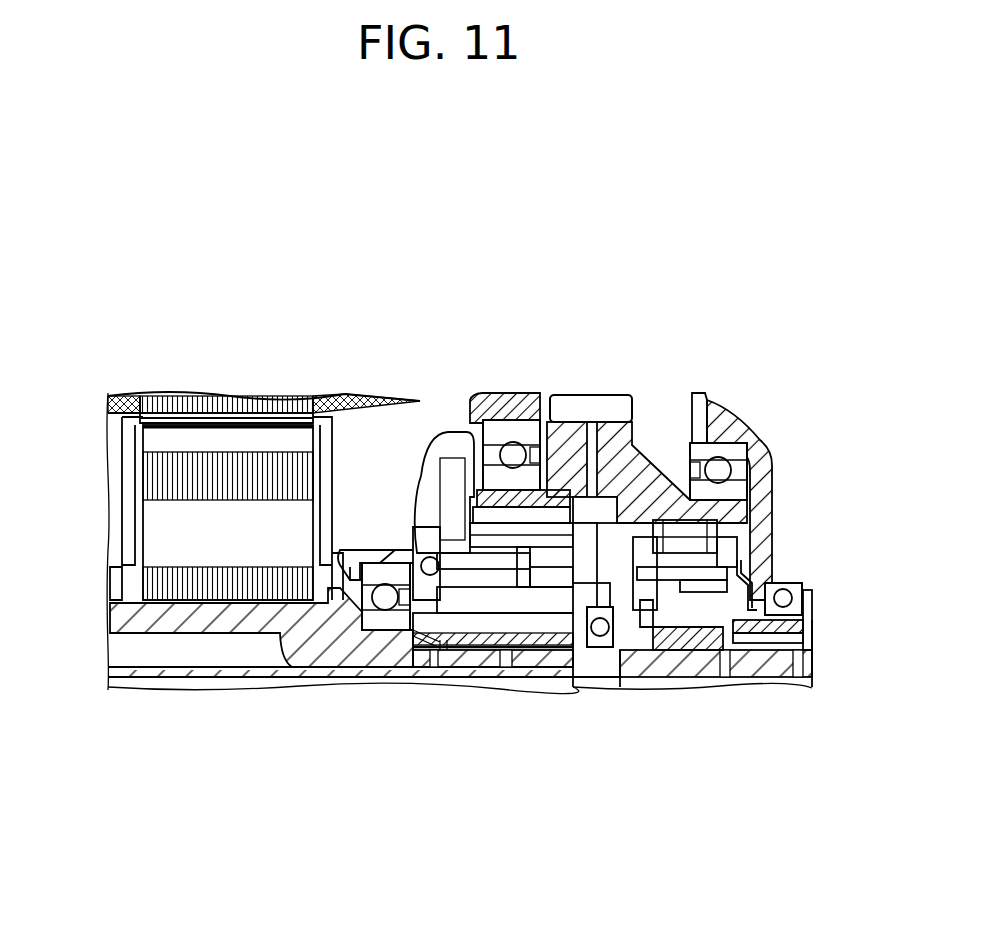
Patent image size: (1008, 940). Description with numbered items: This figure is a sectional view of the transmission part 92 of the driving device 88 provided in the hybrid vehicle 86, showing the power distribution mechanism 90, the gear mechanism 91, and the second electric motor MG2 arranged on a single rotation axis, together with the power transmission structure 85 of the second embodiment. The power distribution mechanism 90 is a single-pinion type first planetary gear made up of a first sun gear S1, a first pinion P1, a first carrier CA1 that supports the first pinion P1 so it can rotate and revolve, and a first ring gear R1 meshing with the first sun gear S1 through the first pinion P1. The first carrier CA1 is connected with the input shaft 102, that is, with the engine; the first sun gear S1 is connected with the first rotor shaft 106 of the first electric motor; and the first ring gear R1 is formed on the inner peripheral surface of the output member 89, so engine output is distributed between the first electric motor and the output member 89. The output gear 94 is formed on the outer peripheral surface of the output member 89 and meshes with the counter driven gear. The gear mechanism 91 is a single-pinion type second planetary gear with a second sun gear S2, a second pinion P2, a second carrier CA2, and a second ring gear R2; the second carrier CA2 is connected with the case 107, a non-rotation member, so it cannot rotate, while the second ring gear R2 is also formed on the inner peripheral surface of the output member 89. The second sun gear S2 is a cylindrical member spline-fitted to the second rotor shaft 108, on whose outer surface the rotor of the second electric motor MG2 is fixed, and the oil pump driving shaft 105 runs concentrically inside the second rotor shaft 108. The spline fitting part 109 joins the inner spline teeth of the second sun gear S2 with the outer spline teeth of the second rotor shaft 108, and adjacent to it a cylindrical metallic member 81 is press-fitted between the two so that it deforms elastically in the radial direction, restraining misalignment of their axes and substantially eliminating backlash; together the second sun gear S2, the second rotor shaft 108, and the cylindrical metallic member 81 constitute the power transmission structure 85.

The hybrid vehicle 86 is at (198, 178).
The driving device 88 is at (699, 253).
The second electric motor MG2 is at (160, 365).
The gear mechanism 91 is at (462, 387).
The output member 89 is at (588, 378).
The output gear 94 is at (613, 402).
The power distribution mechanism 90 is at (740, 409).
The case 107 is at (430, 456).
The second ring gear R2 is at (478, 490).
The second pinion P2 is at (475, 527).
The second carrier CA2 is at (426, 546).
The second sun gear S2 is at (480, 645).
The first ring gear R1 is at (705, 540).
The first pinion P1 is at (712, 548).
The first carrier CA1 is at (741, 562).
The first sun gear S1 is at (697, 650).
The first rotor shaft 106 is at (808, 616).
The oil pump driving shaft 105 is at (212, 676).
The second rotor shaft 108 is at (365, 660).
The cylindrical metallic member 81 is at (440, 660).
The spline fitting part 109 is at (528, 657).
The input shaft 102 is at (765, 672).
The transmission part 92 is at (645, 735).
The power transmission structure 85 is at (355, 770).